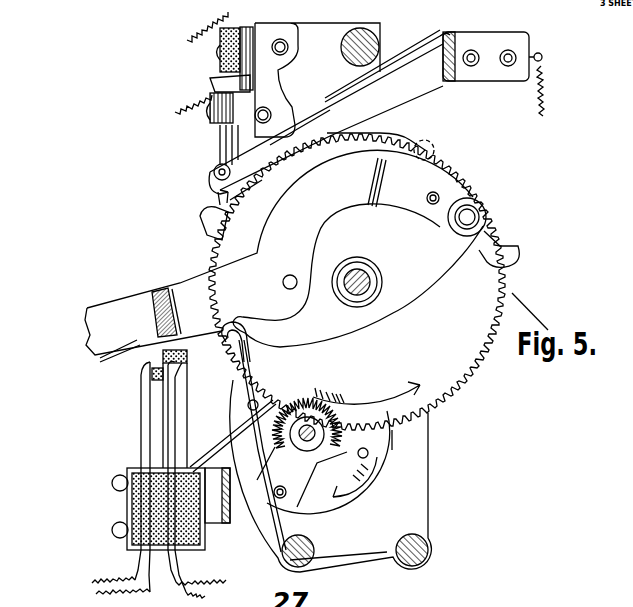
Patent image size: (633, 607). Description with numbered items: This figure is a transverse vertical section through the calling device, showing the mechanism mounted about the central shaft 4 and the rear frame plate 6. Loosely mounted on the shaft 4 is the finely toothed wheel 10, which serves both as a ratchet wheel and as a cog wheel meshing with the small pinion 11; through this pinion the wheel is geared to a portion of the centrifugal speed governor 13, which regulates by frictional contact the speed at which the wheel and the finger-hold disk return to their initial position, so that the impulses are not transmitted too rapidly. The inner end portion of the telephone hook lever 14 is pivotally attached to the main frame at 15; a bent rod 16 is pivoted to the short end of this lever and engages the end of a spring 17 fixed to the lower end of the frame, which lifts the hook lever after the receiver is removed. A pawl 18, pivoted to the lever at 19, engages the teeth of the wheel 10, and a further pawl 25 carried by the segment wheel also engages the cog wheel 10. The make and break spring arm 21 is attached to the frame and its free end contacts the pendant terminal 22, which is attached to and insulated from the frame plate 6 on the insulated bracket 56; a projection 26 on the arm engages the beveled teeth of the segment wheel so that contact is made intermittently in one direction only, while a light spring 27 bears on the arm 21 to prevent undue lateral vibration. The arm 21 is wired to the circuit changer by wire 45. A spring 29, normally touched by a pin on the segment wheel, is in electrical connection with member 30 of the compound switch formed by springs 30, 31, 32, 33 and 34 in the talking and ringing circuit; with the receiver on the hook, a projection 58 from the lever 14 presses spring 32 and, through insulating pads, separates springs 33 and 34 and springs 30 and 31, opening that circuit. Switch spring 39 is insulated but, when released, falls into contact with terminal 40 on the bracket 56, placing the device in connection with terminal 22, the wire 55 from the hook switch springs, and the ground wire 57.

The shaft 4 is at (357, 270).
The rear frame plate 6 is at (422, 473).
The wheel 10 is at (357, 282).
The pinion 11 is at (305, 420).
The centrifugal speed governor 13 is at (323, 507).
The telephone hook lever 14 is at (279, 252).
The pivot 15 is at (290, 275).
The bent rod 16 is at (385, 312).
The spring 17 is at (267, 517).
The pawl 18 is at (503, 250).
The pawl pivot 19 is at (438, 195).
The make and break spring arm 21 is at (393, 92).
The pendant terminal 22 is at (216, 160).
The pawl 25 is at (205, 221).
The projection 26 is at (320, 133).
The spring 27 is at (388, 63).
The spring 29 is at (208, 462).
The switch spring 30 is at (185, 400).
The switch spring 31 is at (170, 420).
The switch spring 32 is at (163, 430).
The switch spring 33 is at (148, 442).
The switch spring 34 is at (141, 457).
The switch spring 39 is at (210, 73).
The terminal 40 is at (250, 138).
The wire 45 is at (543, 116).
The wire 55 is at (176, 112).
The bracket 56 is at (257, 33).
The ground wire 57 is at (190, 40).
The projection 58 is at (133, 362).